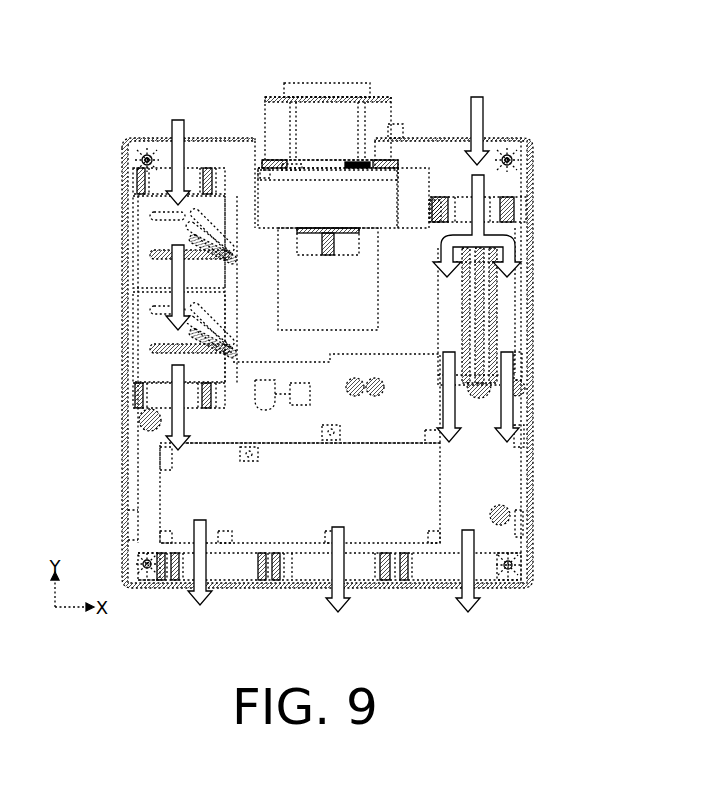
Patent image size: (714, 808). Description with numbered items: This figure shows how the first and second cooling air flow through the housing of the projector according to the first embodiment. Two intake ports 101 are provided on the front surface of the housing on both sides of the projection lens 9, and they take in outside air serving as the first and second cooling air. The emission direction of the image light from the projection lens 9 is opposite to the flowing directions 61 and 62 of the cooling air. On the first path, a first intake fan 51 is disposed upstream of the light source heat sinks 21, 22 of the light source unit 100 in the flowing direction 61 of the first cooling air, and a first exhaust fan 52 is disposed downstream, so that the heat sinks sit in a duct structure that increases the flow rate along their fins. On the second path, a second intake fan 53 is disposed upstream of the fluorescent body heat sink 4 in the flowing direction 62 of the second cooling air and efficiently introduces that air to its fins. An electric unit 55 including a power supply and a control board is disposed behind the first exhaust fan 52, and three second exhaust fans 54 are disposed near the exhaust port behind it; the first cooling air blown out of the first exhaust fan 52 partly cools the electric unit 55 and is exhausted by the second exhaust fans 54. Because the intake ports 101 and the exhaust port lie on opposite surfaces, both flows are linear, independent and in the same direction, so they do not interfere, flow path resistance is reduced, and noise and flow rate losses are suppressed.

The fluorescent body heat sink 4 is at (505, 315).
The projection lens 9 is at (327, 90).
The light source heat sink 21 is at (135, 320).
The light source heat sink 22 is at (135, 258).
The first intake fan 51 is at (130, 178).
The first exhaust fan 52 is at (130, 390).
The second intake fan 53 is at (525, 200).
The second exhaust fan 54 is at (235, 580).
The electric unit 55 is at (205, 495).
The flowing direction of the first cooling air 61 is at (180, 127).
The flowing direction of the second cooling air 62 is at (480, 127).
The light source unit 100 is at (358, 343).
The intake port 101 is at (168, 135).